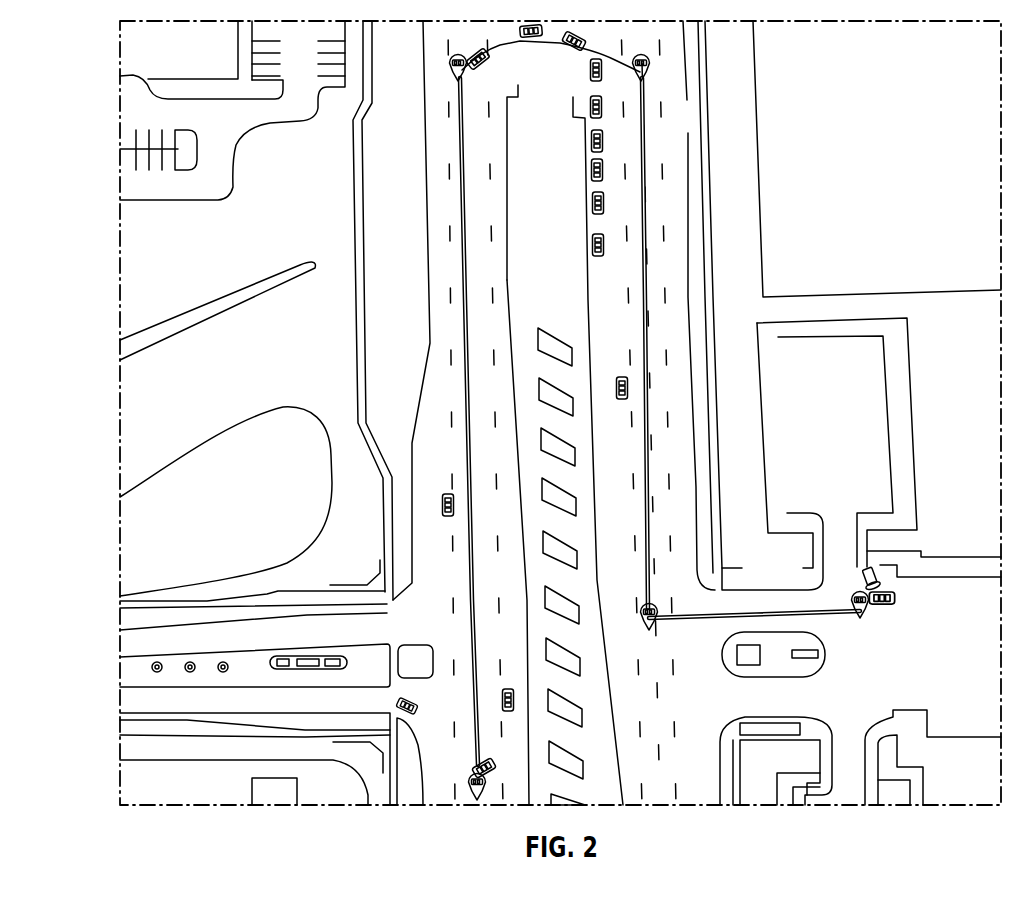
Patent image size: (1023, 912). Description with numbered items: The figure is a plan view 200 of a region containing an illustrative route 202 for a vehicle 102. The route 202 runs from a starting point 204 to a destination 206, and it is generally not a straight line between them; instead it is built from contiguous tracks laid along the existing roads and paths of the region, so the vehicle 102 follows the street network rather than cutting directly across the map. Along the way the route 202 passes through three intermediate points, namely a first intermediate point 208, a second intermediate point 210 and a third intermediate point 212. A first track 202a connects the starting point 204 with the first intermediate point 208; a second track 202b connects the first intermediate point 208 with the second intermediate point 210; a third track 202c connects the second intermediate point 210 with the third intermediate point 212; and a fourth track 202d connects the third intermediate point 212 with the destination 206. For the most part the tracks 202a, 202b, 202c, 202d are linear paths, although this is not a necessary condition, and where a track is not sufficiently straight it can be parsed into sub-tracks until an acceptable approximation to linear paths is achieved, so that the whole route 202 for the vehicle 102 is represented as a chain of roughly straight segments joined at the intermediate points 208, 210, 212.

The plan view 200 is at (87, 51).
The illustrative route 202 is at (410, 97).
The first track 202a is at (754, 612).
The second track 202b is at (651, 443).
The third track 202c is at (538, 44).
The fourth track 202d is at (468, 300).
The starting point 204 is at (880, 563).
The destination 206 is at (468, 780).
The first intermediate point 208 is at (644, 606).
The second intermediate point 210 is at (645, 78).
The third intermediate point 212 is at (460, 78).
The vehicle 102 is at (879, 606).